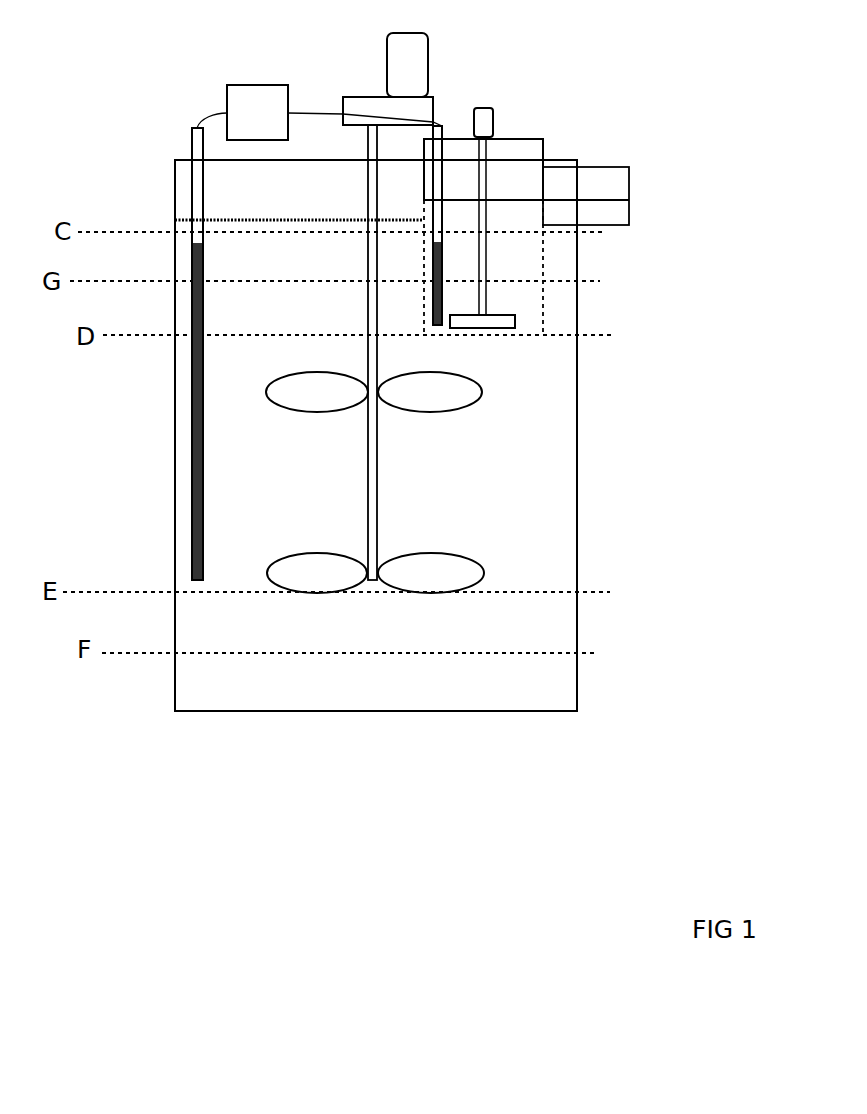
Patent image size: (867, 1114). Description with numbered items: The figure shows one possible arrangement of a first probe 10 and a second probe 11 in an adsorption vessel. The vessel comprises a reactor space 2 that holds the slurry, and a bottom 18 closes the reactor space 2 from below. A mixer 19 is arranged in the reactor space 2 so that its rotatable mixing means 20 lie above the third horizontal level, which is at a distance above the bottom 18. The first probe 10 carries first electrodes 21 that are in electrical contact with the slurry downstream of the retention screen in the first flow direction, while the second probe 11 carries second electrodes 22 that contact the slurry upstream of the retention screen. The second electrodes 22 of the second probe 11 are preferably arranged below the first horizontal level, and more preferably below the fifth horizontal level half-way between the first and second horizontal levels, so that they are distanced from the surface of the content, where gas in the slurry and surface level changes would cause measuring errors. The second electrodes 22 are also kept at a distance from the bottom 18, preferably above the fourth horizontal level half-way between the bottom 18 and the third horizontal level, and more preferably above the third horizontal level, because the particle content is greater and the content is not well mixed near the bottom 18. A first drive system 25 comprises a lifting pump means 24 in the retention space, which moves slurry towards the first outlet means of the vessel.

The reactor space 2 is at (332, 488).
The first probe 10 is at (448, 118).
The second probe 11 is at (186, 133).
The bottom 18 is at (527, 705).
The mixer 19 is at (363, 76).
The rotatable mixing means 20 is at (440, 553).
The first electrodes 21 is at (443, 267).
The second electrodes 22 is at (198, 481).
The lifting pump means 24 is at (522, 306).
The first drive system 25 is at (183, 457).